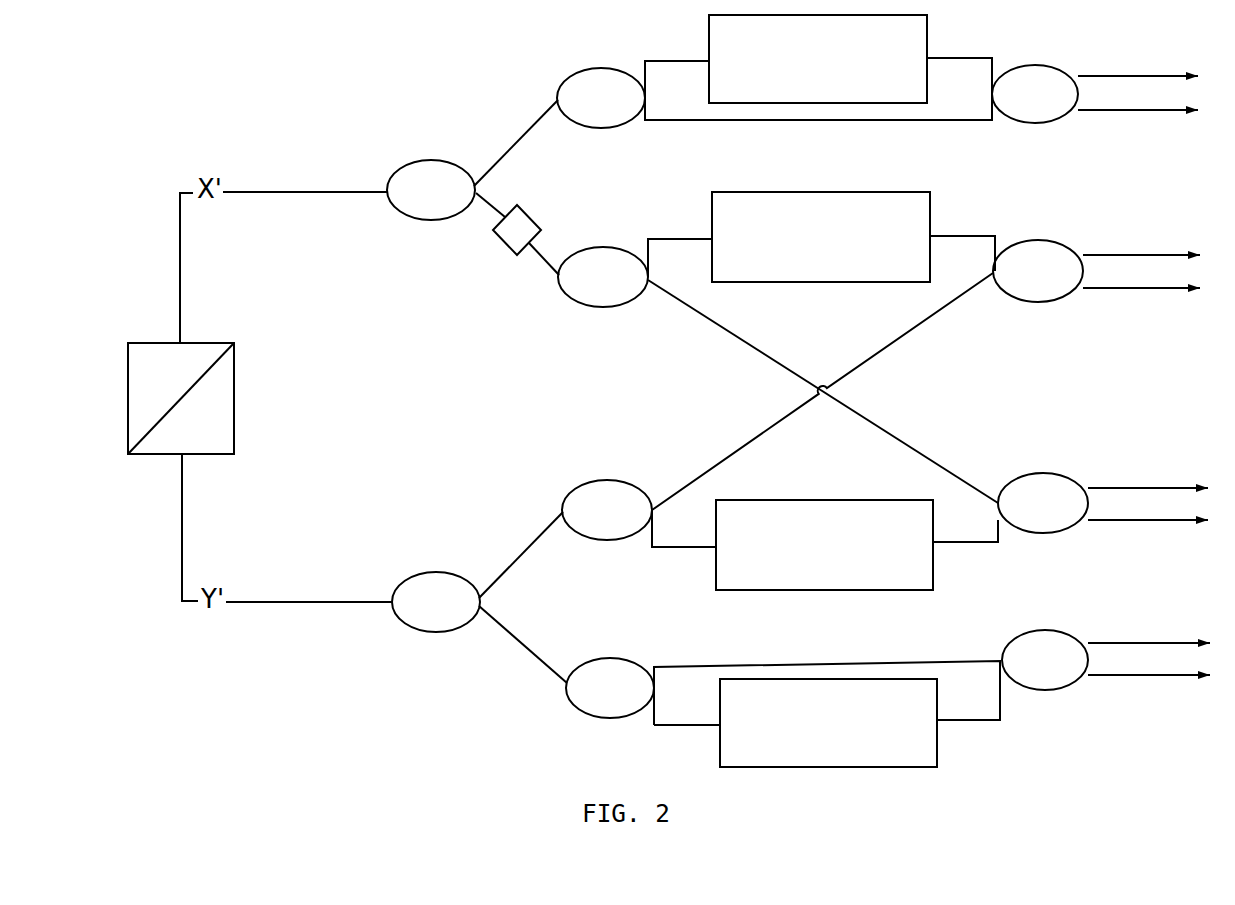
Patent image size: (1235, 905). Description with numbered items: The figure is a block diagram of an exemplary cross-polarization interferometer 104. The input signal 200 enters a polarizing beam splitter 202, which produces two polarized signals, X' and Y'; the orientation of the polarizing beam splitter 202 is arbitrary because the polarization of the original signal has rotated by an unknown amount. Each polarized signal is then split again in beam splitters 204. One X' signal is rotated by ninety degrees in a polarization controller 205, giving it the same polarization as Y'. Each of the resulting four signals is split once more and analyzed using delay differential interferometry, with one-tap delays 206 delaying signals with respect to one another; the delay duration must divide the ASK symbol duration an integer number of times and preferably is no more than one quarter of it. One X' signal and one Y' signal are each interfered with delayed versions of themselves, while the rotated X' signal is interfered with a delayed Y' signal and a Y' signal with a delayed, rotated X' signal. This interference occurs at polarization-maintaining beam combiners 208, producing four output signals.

The cross-polarization interferometer 104 is at (323, 82).
The input signal 200 is at (128, 402).
The polarizing beam splitter 202 is at (230, 439).
The beam splitter 204 is at (455, 205).
The polarization controller 205 is at (505, 243).
The one-tap delay 206 is at (842, 92).
The polarization-maintaining beam combiner 208 is at (1059, 109).